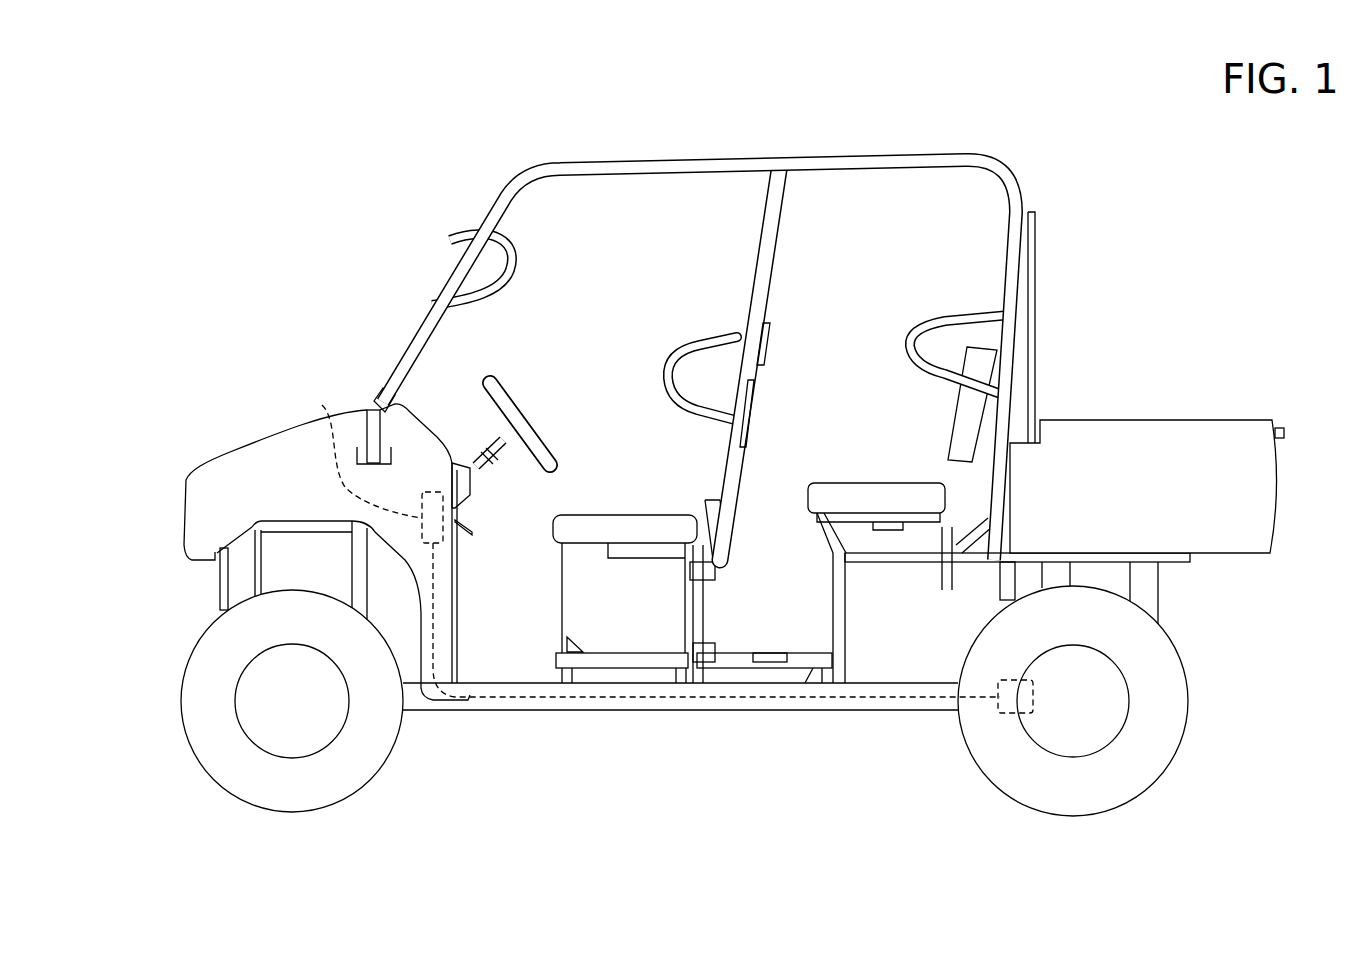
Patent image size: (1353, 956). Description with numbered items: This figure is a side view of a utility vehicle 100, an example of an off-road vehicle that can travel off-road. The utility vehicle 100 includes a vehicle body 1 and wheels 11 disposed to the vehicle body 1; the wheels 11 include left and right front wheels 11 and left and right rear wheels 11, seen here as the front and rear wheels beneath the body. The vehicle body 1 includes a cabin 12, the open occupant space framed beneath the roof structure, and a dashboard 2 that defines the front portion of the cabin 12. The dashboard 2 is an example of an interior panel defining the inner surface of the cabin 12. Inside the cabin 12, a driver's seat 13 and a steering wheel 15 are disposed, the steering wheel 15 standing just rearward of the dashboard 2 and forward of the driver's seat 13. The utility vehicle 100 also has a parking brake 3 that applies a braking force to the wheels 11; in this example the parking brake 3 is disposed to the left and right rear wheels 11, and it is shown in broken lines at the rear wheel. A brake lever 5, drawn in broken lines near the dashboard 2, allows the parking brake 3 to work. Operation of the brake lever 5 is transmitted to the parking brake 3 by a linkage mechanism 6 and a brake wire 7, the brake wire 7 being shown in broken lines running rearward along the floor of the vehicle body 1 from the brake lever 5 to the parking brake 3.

The utility vehicle 100 is at (377, 148).
The vehicle body 1 is at (428, 302).
The dashboard 2 is at (470, 496).
The parking brake 3 is at (1005, 717).
The brake lever 5 is at (445, 529).
The linkage mechanism 6 is at (327, 544).
The brake wire 7 is at (508, 702).
The wheel 11 is at (195, 762).
The cabin 12 is at (622, 290).
The driver's seat 13 is at (643, 508).
The steering wheel 15 is at (530, 438).